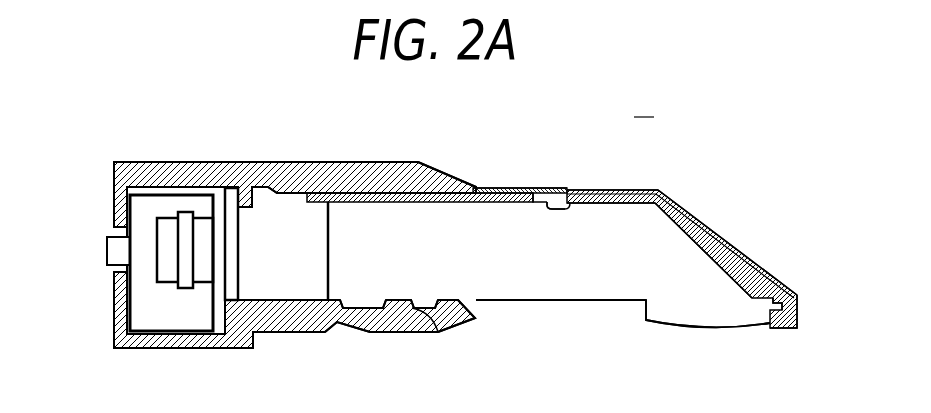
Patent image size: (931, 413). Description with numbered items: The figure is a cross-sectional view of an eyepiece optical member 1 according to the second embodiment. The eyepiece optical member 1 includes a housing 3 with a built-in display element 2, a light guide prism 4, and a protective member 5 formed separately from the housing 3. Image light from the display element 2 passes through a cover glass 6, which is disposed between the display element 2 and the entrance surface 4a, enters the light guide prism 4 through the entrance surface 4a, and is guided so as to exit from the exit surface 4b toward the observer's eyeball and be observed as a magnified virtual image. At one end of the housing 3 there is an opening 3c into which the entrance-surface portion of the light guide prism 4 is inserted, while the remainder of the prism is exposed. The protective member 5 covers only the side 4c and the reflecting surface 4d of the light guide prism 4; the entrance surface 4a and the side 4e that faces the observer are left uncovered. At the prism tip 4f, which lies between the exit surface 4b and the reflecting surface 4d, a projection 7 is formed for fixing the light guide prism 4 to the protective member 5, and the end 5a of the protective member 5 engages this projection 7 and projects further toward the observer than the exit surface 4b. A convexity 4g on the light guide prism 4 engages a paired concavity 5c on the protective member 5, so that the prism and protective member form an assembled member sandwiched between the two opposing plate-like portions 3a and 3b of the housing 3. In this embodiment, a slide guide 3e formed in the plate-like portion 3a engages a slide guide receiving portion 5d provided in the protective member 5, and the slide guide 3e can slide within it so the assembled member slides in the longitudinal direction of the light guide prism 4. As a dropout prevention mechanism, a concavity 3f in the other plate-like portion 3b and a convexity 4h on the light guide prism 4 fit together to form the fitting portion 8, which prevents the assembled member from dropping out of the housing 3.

The eyepiece optical member 1 is at (644, 106).
The display element 2 is at (120, 250).
The housing 3 is at (190, 162).
The plate-like portion 3a is at (330, 162).
The plate-like portion 3b is at (398, 333).
The opening 3c is at (484, 182).
The slide guide 3e is at (283, 193).
The concavity 3f is at (358, 303).
The light guide prism 4 is at (582, 275).
The entrance surface 4a is at (328, 246).
The exit surface 4b is at (707, 327).
The side 4c is at (607, 190).
The reflecting surface 4d is at (706, 240).
The side 4e is at (534, 302).
The prism tip 4f is at (773, 298).
The convexity 4g is at (541, 205).
The convexity 4h is at (395, 303).
The protective member 5 is at (684, 192).
The end 5a is at (800, 327).
The concavity 5c is at (569, 197).
The slide guide receiving portion 5d is at (500, 189).
The cover glass 6 is at (232, 255).
The projection 7 is at (800, 303).
The fitting portion 8 is at (434, 335).